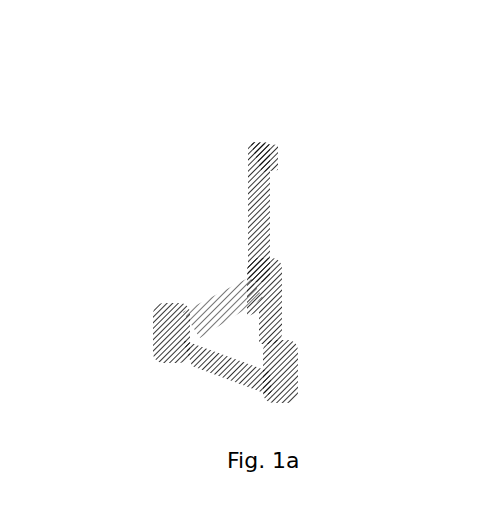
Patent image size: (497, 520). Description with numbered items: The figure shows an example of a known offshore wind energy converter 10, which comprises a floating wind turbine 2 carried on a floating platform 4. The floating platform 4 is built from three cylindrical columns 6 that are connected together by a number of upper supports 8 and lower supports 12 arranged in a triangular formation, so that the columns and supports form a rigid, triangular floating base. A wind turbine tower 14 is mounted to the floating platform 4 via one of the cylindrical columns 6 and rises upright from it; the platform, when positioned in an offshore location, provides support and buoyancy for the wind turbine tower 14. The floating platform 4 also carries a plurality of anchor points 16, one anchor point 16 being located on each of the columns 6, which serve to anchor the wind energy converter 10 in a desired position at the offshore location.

The offshore wind energy converter 10 is at (223, 251).
The floating wind turbine 2 is at (317, 212).
The wind turbine tower 14 is at (268, 233).
The upper supports 8 is at (215, 287).
The cylindrical columns 6 is at (211, 343).
The lower supports 12 is at (277, 325).
The floating platform 4 is at (241, 335).
The anchor points 16 is at (295, 397).